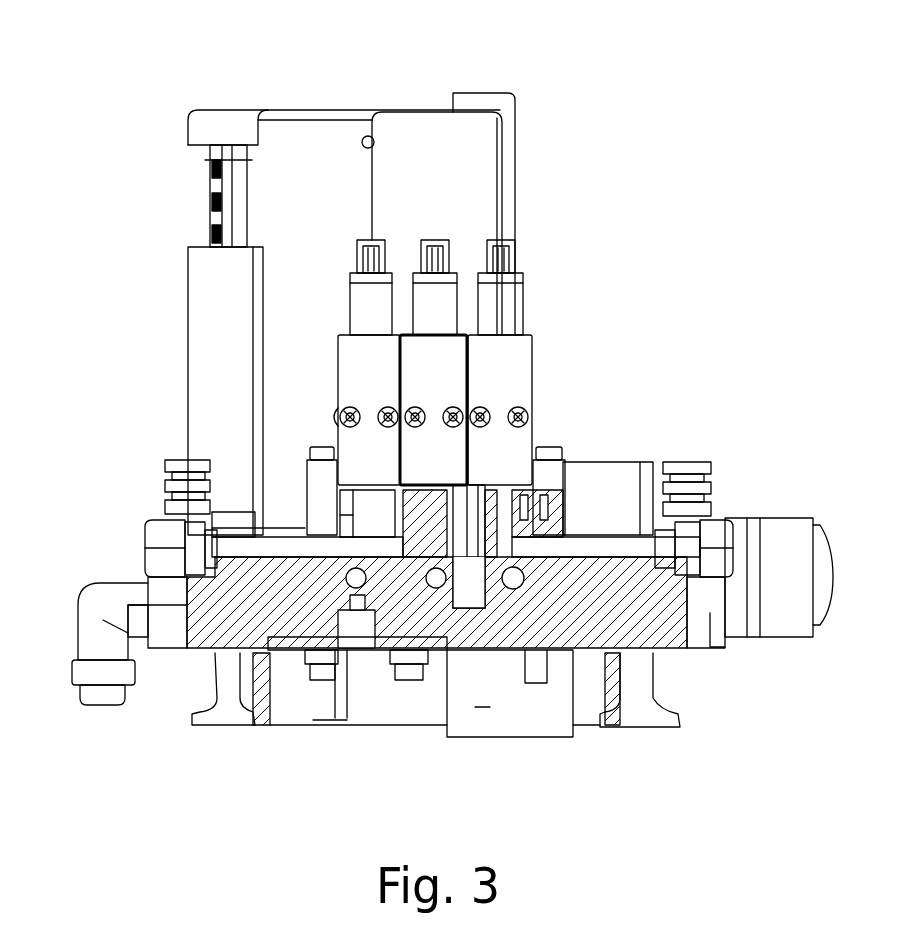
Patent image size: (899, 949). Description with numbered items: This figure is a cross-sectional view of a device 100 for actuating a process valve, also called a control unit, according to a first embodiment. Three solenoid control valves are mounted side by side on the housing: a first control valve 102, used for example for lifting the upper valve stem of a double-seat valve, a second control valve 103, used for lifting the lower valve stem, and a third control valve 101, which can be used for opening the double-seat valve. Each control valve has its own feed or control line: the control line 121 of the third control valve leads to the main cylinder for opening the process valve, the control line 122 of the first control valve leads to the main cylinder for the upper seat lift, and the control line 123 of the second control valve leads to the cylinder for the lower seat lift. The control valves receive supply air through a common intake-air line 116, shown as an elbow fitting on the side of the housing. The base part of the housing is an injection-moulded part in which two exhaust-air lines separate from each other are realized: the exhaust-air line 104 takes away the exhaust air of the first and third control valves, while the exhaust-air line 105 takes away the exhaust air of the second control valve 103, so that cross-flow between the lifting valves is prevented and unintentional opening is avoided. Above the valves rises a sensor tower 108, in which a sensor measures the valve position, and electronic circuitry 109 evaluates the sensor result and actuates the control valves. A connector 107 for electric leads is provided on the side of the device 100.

The device for actuating a process valve 100 is at (617, 157).
The third control valve 101 is at (362, 380).
The first control valve 102 is at (432, 362).
The second control valve 103 is at (502, 375).
The exhaust-air line 104 is at (302, 550).
The exhaust-air line 105 is at (573, 545).
The connector for electric leads 107 is at (787, 532).
The sensor tower 108 is at (468, 158).
The electronic circuitry 109 is at (330, 155).
The intake-air line 116 is at (93, 613).
The control line of the third control valve 121 is at (356, 590).
The control line of the first control valve 122 is at (437, 590).
The control line of the second control valve 123 is at (512, 590).